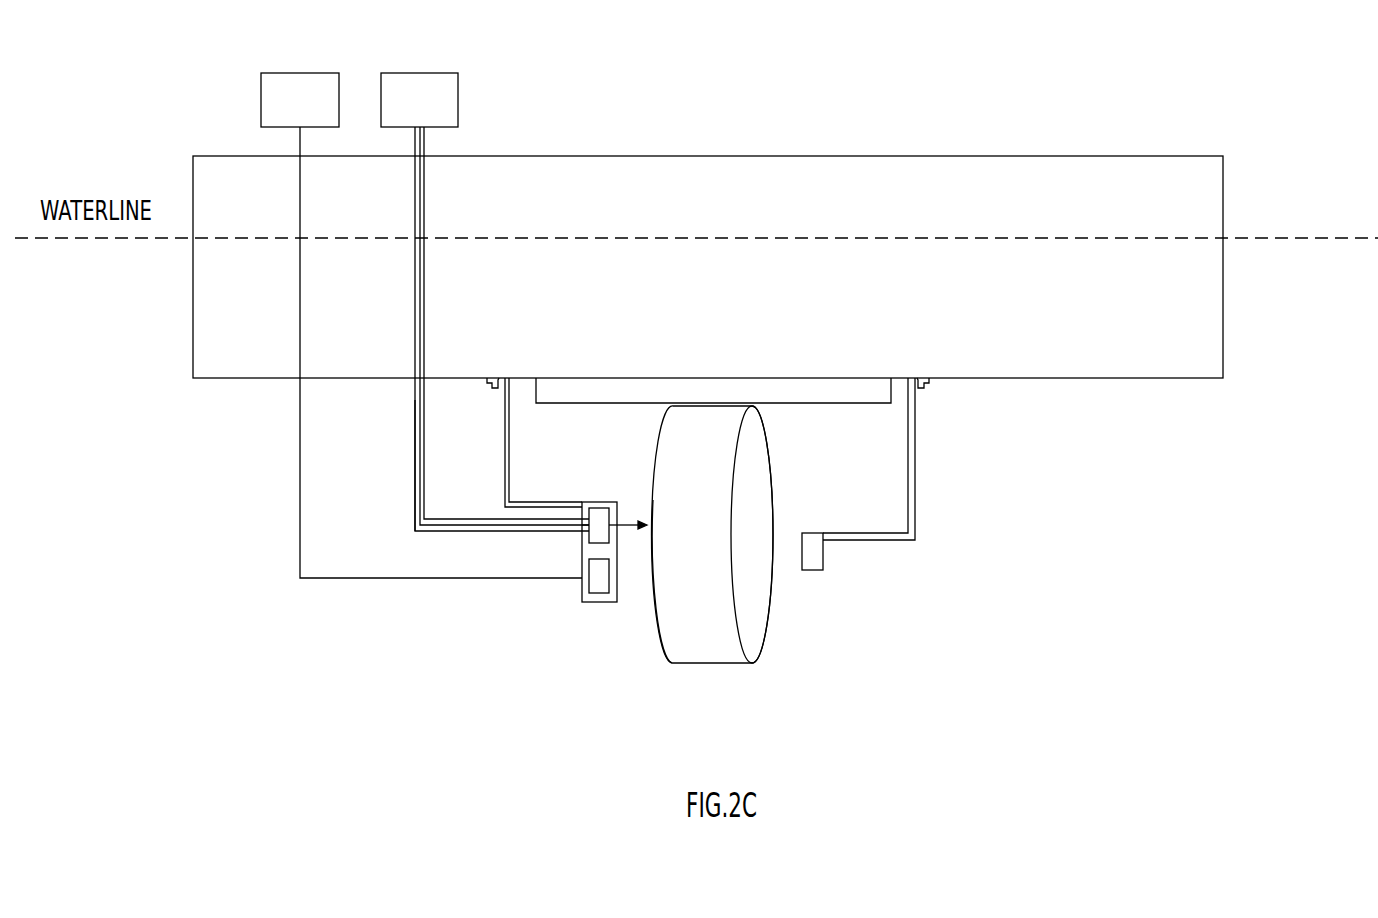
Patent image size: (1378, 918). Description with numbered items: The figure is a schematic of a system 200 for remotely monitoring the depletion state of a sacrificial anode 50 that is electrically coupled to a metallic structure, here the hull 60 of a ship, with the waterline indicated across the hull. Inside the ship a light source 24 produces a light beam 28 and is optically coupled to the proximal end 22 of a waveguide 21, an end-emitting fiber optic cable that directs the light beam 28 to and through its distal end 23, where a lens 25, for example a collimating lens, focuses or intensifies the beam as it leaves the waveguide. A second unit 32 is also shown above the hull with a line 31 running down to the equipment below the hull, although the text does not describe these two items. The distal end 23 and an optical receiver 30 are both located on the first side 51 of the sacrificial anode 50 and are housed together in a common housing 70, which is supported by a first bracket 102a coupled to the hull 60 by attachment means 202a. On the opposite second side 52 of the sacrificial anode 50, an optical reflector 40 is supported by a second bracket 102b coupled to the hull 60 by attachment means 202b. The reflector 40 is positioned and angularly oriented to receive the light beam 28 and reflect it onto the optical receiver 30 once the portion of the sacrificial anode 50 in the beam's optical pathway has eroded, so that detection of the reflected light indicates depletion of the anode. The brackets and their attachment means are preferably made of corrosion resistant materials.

The system 200 is at (923, 92).
The hull 60 is at (722, 319).
The power source 32 is at (281, 73).
The light source 24 is at (399, 73).
The proximal end 22 is at (427, 129).
The power cable 31 is at (300, 558).
The waveguide 21 is at (427, 498).
The first bracket 102a is at (510, 458).
The second bracket 102b is at (907, 492).
The attachment means 202a is at (494, 389).
The attachment means 202b is at (924, 389).
The common housing 70 is at (605, 603).
The lens 25 is at (600, 508).
The optical receiver 30 is at (589, 596).
The distal end 23 is at (590, 527).
The light beam 28 is at (623, 523).
The optical reflector 40 is at (812, 532).
The sacrificial anode 50 is at (698, 664).
The first side 51 is at (661, 648).
The second side 52 is at (759, 603).